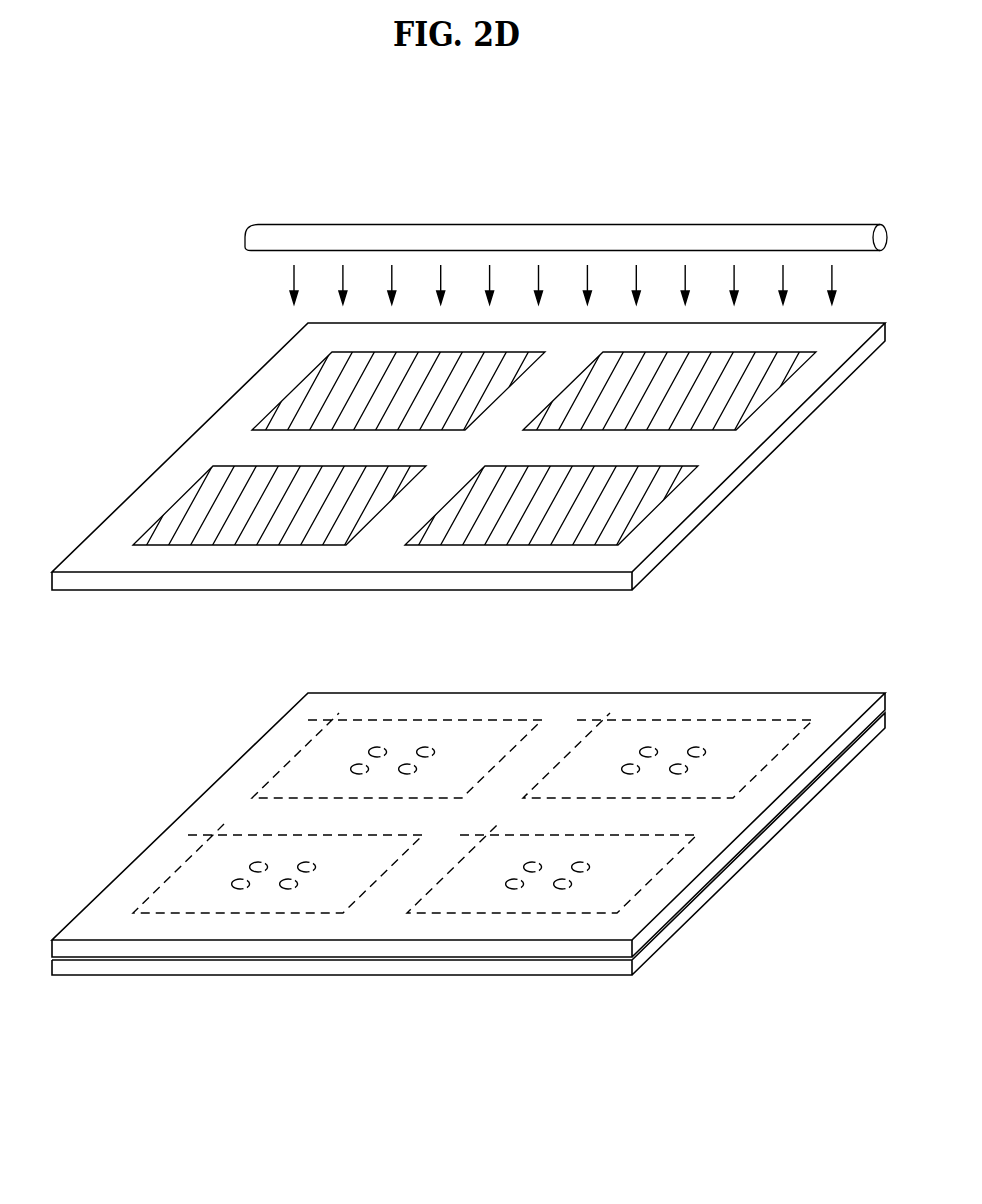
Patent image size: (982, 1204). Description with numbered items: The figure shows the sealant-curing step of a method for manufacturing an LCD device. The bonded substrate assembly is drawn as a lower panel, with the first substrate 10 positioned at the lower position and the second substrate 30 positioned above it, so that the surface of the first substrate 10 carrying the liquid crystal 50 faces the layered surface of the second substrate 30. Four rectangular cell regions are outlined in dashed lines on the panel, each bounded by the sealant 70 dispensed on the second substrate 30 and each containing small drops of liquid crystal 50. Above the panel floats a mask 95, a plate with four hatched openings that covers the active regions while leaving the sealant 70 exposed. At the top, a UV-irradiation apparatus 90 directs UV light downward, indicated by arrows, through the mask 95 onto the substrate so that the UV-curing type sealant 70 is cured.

The first substrate 10 is at (350, 963).
The second substrate 30 is at (779, 705).
The liquid crystal 50 is at (560, 888).
The sealant 70 is at (427, 720).
The UV-irradiation apparatus 90 is at (659, 228).
The mask 95 is at (210, 443).